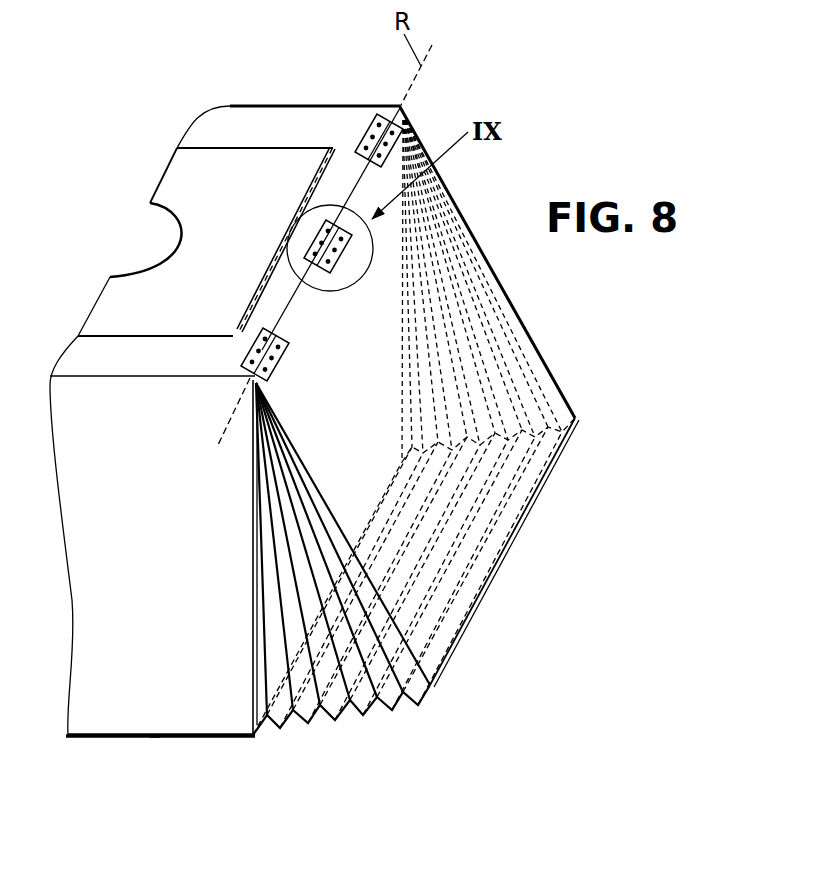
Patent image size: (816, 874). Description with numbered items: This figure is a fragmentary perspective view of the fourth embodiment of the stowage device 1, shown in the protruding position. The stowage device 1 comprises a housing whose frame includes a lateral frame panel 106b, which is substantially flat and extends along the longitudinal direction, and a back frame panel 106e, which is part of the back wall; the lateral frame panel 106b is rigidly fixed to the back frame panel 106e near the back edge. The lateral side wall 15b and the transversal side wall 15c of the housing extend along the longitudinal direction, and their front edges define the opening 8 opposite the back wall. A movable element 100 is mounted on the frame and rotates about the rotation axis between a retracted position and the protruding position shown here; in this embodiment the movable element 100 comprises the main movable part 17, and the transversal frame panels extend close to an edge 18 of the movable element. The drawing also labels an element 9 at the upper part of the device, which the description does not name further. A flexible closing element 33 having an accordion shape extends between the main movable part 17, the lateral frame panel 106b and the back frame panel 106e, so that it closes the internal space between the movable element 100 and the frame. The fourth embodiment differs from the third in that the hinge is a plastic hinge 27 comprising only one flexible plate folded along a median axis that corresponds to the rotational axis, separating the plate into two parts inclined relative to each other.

The stowage device 1 is at (578, 538).
The opening 8 is at (145, 243).
The top plate 9 is at (213, 178).
The main movable part 17 is at (372, 384).
The edge 18 is at (245, 345).
The plastic hinge 27 is at (322, 226).
The flexible closing element 33 is at (352, 668).
The movable element 100 is at (577, 387).
The lateral frame panel 106b is at (189, 568).
The back frame panel 106e is at (92, 740).
The lateral side wall 15b is at (160, 708).
The transversal side wall 15c is at (566, 322).